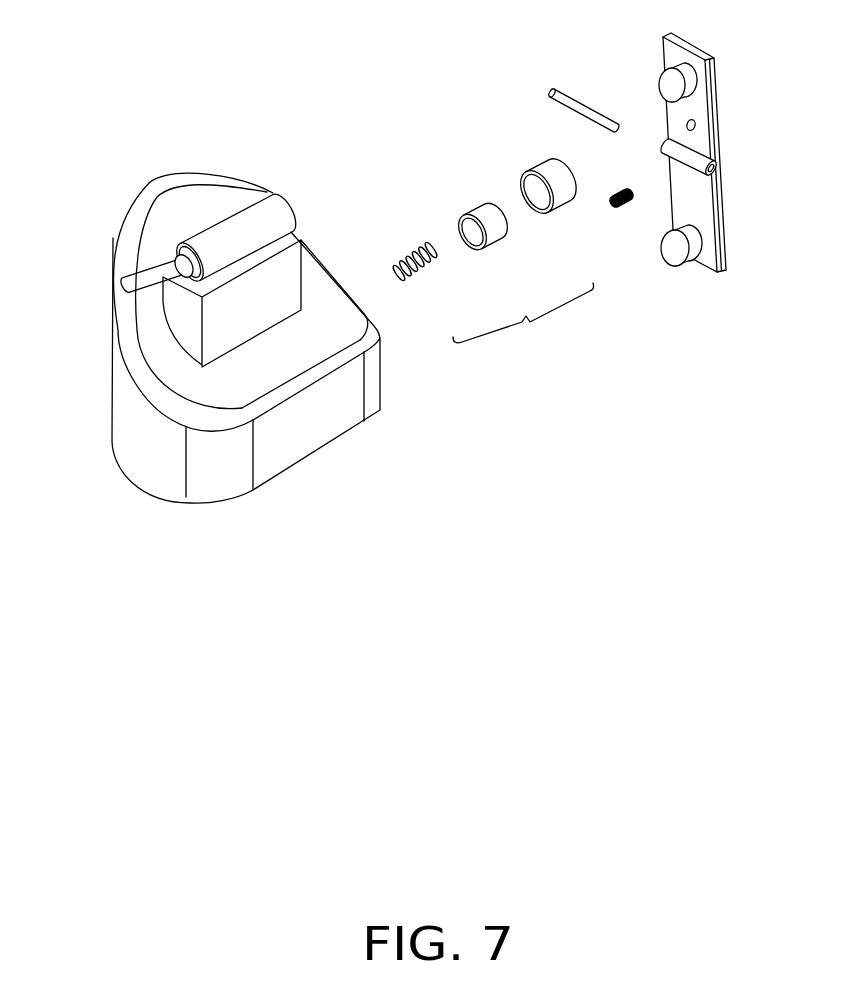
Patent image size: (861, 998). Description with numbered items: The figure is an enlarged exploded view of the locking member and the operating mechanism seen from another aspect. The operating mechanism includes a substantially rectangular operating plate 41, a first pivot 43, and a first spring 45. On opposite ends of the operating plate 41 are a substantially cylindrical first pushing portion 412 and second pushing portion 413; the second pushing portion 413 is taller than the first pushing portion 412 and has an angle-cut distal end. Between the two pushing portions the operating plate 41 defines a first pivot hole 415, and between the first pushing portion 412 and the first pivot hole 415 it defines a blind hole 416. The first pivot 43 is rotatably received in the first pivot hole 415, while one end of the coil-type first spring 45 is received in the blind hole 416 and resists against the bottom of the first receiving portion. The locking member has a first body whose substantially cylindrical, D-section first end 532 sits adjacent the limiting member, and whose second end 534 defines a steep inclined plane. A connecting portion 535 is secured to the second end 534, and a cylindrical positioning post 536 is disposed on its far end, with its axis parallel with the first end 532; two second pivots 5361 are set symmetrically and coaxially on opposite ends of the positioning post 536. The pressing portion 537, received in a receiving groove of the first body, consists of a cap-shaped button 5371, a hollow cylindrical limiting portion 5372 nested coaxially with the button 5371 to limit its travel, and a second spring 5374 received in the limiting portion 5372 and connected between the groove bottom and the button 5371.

The operating plate 41 is at (722, 213).
The first pushing portion 412 is at (680, 65).
The second pushing portion 413 is at (698, 247).
The first pivot hole 415 is at (715, 165).
The blind hole 416 is at (693, 123).
The first pivot 43 is at (578, 110).
The first spring 45 is at (624, 190).
The first end 532 is at (148, 448).
The second end 534 is at (172, 358).
The connecting portion 535 is at (183, 307).
The positioning post 536 is at (243, 220).
The second pivots 5361 is at (187, 260).
The pressing portion 537 is at (523, 321).
The button 5371 is at (565, 193).
The limiting portion 5372 is at (492, 232).
The second spring 5374 is at (420, 273).